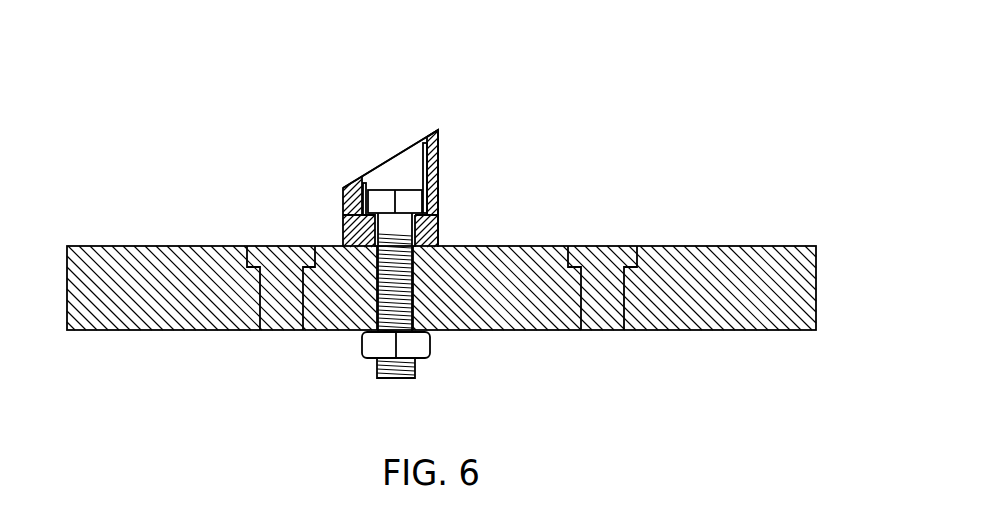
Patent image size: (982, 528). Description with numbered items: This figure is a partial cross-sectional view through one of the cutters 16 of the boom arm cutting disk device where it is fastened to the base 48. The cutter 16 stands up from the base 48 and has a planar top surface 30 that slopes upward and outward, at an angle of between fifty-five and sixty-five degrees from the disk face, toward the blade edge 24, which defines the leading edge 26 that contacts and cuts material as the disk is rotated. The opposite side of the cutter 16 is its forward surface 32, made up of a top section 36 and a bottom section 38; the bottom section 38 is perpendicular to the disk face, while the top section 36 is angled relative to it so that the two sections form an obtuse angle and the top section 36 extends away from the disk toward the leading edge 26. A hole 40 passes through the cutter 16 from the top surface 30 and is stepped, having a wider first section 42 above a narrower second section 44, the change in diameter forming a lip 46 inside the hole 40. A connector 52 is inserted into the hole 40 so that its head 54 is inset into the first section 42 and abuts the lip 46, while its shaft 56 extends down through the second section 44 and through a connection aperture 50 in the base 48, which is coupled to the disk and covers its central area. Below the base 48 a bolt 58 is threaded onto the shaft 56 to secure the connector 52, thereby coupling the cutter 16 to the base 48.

The cutter 16 is at (338, 164).
The blade edge 24 is at (445, 132).
The leading edge 26 is at (464, 126).
The top surface 30 is at (383, 197).
The forward surface 32 is at (458, 188).
The top section 36 is at (440, 150).
The bottom section 38 is at (440, 232).
The hole 40 is at (416, 131).
The first section 42 is at (410, 176).
The second section 44 is at (372, 220).
The lip 46 is at (357, 200).
The base 48 is at (503, 305).
The connection aperture 50 is at (458, 387).
The connector 52 is at (403, 228).
The head 54 is at (363, 188).
The shaft 56 is at (423, 325).
The bolt 58 is at (376, 342).